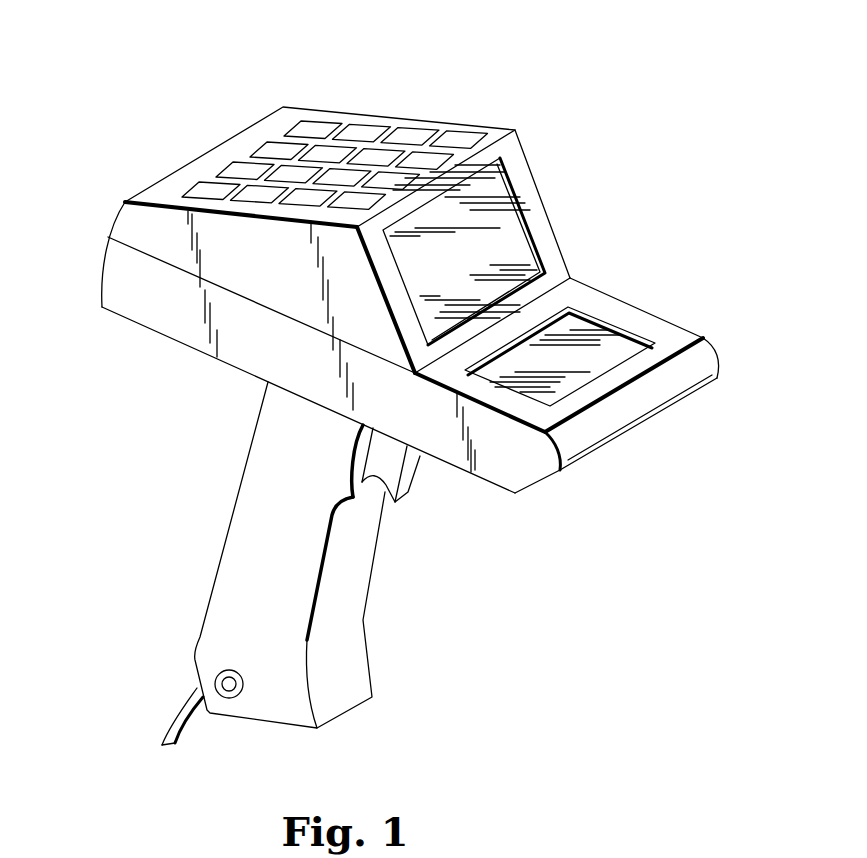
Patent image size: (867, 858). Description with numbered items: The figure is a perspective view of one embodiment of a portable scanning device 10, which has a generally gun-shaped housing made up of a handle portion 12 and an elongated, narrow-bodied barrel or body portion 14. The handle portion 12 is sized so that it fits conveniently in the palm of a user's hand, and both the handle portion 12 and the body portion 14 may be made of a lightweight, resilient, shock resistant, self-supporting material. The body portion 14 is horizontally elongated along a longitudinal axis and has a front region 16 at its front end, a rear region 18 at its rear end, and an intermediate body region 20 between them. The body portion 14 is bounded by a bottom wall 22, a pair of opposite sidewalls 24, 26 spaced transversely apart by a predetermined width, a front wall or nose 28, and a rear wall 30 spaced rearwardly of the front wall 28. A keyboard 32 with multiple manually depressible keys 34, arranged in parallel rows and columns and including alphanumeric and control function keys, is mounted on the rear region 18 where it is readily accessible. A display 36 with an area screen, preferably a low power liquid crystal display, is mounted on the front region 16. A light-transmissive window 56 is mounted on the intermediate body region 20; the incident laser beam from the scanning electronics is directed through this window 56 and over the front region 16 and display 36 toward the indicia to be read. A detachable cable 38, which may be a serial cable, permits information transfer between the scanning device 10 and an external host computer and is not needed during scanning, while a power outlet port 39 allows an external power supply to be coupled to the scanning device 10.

The portable scanning device 10 is at (437, 70).
The handle portion 12 is at (226, 572).
The body portion 14 is at (548, 212).
The front region 16 is at (673, 321).
The rear region 18 is at (187, 163).
The intermediate body region 20 is at (560, 248).
The bottom wall 22 is at (172, 342).
The sidewall 24 is at (407, 426).
The sidewall 26 is at (702, 337).
The front wall 28 is at (636, 402).
The rear wall 30 is at (110, 224).
The keyboard 32 is at (335, 137).
The keys 34 is at (417, 134).
The display 36 is at (607, 340).
The cable 38 is at (178, 718).
The power outlet port 39 is at (233, 700).
The light-transmissive window 56 is at (507, 193).